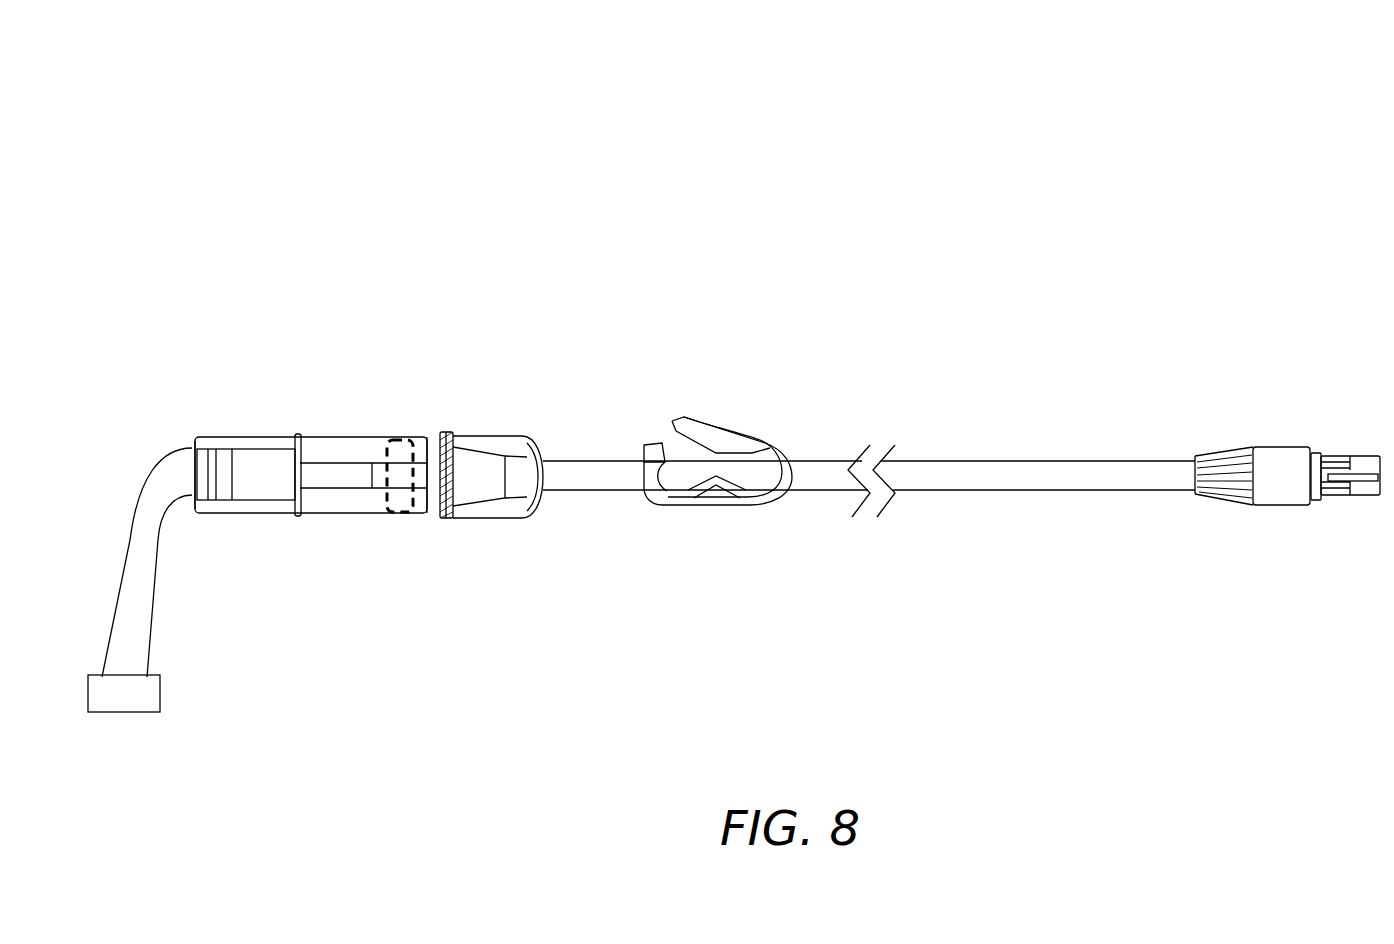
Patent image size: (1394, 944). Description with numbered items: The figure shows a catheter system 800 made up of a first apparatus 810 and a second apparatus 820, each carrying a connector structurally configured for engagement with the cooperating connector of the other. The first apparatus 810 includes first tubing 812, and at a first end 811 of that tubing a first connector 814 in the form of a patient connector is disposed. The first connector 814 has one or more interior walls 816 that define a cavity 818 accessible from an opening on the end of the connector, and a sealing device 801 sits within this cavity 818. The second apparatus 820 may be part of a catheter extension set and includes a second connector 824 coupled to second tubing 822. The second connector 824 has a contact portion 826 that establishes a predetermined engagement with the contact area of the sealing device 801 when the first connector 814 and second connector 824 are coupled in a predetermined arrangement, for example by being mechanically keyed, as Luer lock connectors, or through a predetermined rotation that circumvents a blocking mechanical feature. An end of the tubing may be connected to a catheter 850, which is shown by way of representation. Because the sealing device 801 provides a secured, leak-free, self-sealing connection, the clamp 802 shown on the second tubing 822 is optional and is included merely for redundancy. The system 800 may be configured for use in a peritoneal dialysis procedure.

The catheter system 800 is at (394, 118).
The sealing device 801 is at (385, 495).
The clamp 802 is at (705, 421).
The first apparatus 810 is at (500, 385).
The first end 811 is at (185, 432).
The first tubing 812 is at (152, 612).
The first connector 814 is at (418, 526).
The interior walls 816 is at (385, 440).
The cavity 818 is at (345, 466).
The second apparatus 820 is at (1380, 360).
The second tubing 822 is at (931, 490).
The second connector 824 is at (507, 530).
The contact portion 826 is at (455, 520).
The catheter 850 is at (146, 706).